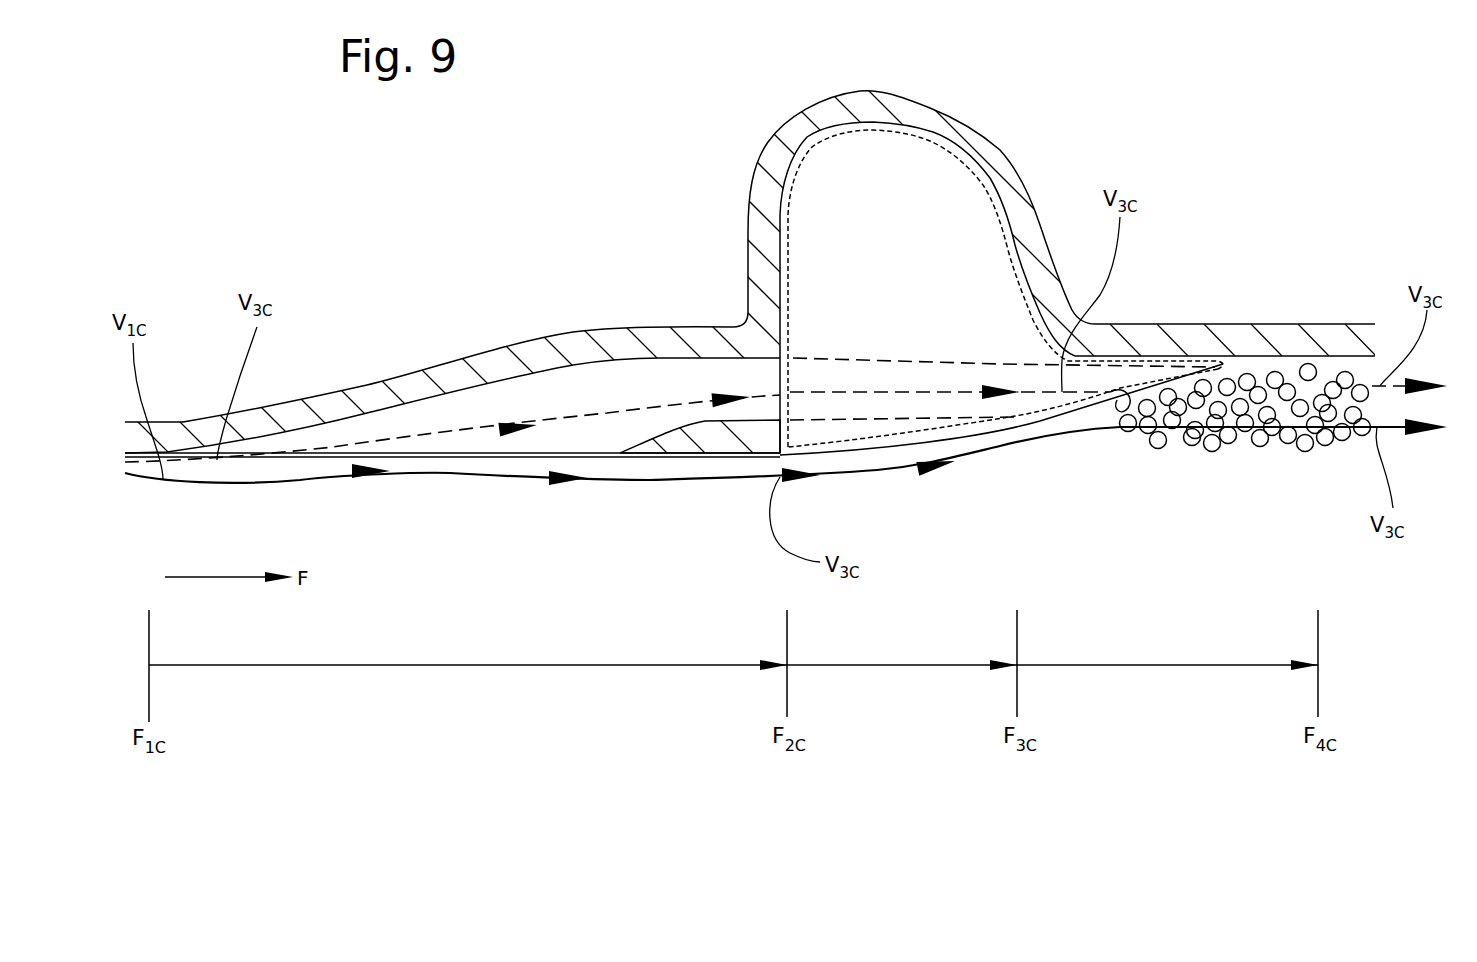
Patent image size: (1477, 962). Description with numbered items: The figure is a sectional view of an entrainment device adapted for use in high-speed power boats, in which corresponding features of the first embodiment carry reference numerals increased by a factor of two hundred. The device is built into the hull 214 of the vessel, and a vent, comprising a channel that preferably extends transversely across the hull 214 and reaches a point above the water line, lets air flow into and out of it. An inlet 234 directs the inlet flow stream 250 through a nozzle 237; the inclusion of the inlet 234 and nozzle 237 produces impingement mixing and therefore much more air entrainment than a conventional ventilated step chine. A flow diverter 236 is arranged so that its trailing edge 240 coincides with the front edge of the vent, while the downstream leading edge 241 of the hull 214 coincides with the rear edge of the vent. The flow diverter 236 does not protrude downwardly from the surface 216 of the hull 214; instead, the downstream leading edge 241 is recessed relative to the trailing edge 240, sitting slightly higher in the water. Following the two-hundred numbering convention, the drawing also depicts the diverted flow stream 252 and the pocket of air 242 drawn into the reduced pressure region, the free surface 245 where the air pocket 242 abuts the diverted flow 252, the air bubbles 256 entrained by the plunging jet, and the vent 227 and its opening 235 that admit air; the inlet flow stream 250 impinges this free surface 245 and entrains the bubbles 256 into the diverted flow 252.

The hull 214 is at (1225, 294).
The surface of the hull 216 is at (1167, 342).
The flexible membrane 227 is at (930, 224).
The inlet 234 is at (563, 440).
The inlet flow path 235 is at (452, 447).
The flow diverter 236 is at (733, 437).
The nozzle 237 is at (780, 384).
The trailing edge of the flow diverter 240 is at (783, 452).
The downstream leading edge of the hull 241 is at (1076, 358).
The expansion chamber 242 is at (867, 162).
The membrane lower portion 245 is at (930, 437).
The inlet flow stream 250 is at (405, 443).
The fluid flow path 252 is at (420, 475).
The bubbles 256 is at (1243, 440).